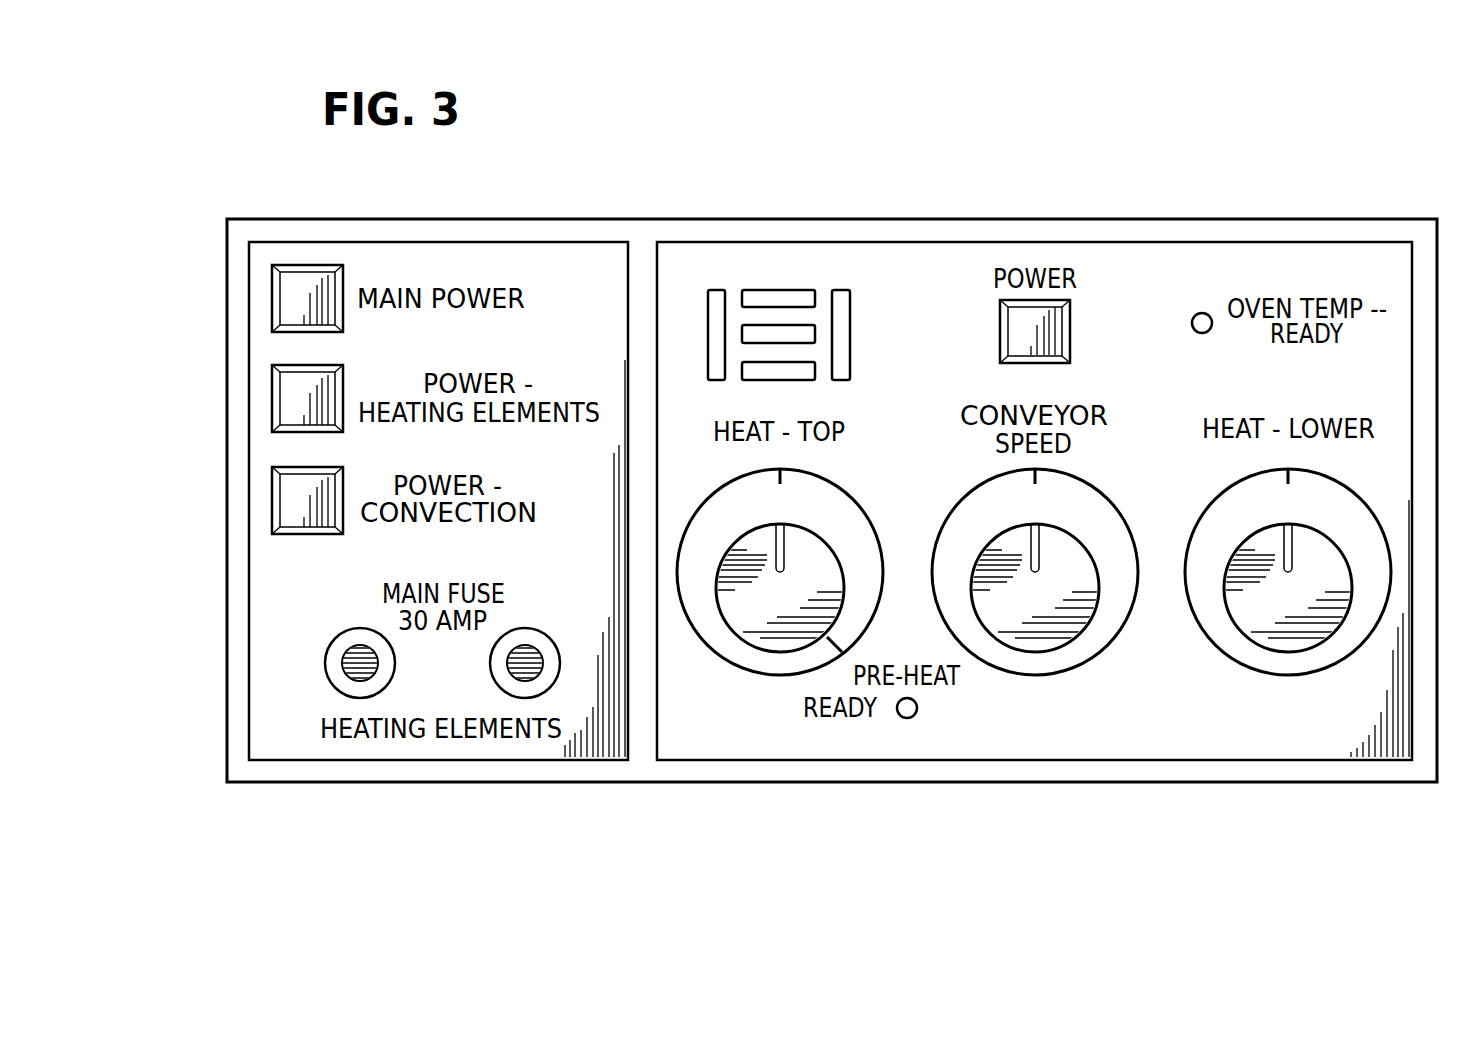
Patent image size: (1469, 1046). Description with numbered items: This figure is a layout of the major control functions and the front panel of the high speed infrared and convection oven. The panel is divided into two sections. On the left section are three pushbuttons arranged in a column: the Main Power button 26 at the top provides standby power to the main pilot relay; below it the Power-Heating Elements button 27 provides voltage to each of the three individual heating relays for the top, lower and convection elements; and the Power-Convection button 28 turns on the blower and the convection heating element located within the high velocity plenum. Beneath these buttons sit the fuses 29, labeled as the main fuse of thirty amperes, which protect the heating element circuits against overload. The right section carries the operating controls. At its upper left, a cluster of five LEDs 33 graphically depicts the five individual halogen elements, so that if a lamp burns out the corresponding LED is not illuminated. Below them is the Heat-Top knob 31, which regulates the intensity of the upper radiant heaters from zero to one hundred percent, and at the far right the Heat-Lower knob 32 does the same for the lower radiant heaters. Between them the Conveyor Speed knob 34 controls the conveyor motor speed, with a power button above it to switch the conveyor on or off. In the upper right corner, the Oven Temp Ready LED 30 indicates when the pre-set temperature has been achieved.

The Main Power button 26 is at (290, 298).
The Power-Heating Elements button 27 is at (290, 400).
The Power-Convection button 28 is at (290, 492).
The fuse 29 is at (343, 672).
The Oven Temp Ready LED 30 is at (1202, 313).
The upper radiant heater control knob 31 is at (767, 643).
The lower radiant heater control knob 32 is at (1298, 643).
The halogen element LEDs 33 is at (712, 313).
The conveyor speed knob 34 is at (1035, 643).